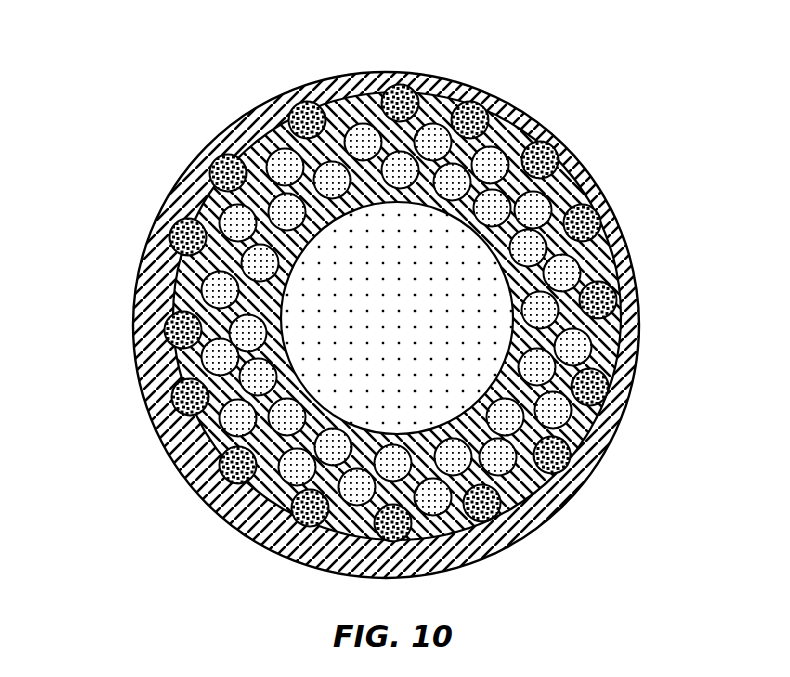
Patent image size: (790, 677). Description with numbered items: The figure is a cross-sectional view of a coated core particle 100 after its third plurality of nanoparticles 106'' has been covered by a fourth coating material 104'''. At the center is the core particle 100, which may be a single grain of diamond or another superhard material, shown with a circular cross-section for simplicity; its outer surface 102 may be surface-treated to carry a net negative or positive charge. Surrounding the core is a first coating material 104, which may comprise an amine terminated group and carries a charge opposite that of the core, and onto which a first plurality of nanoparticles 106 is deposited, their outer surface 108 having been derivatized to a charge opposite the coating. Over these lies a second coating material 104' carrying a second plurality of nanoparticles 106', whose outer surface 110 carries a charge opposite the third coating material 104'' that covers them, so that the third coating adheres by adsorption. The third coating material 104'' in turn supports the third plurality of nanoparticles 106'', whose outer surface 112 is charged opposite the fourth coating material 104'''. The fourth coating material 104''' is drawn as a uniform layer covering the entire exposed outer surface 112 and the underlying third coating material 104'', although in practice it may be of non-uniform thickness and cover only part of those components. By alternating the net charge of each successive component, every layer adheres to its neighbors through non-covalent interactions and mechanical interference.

The core particle 100 is at (379, 299).
The outer surface of the core particle 102 is at (549, 486).
The first coating material 104 is at (624, 415).
The second coating material 104' is at (591, 145).
The third coating material 104'' is at (341, 88).
The fourth coating material 104''' is at (334, 325).
The first plurality of nanoparticles 106 is at (624, 339).
The second plurality of nanoparticles 106' is at (482, 105).
The third plurality of nanoparticles 106'' is at (259, 115).
The outer surface of the first plurality of nanoparticles 108 is at (565, 235).
The outer surface of the second plurality of nanoparticles 110 is at (383, 73).
The outer surface of the third plurality of nanoparticles 112 is at (180, 212).